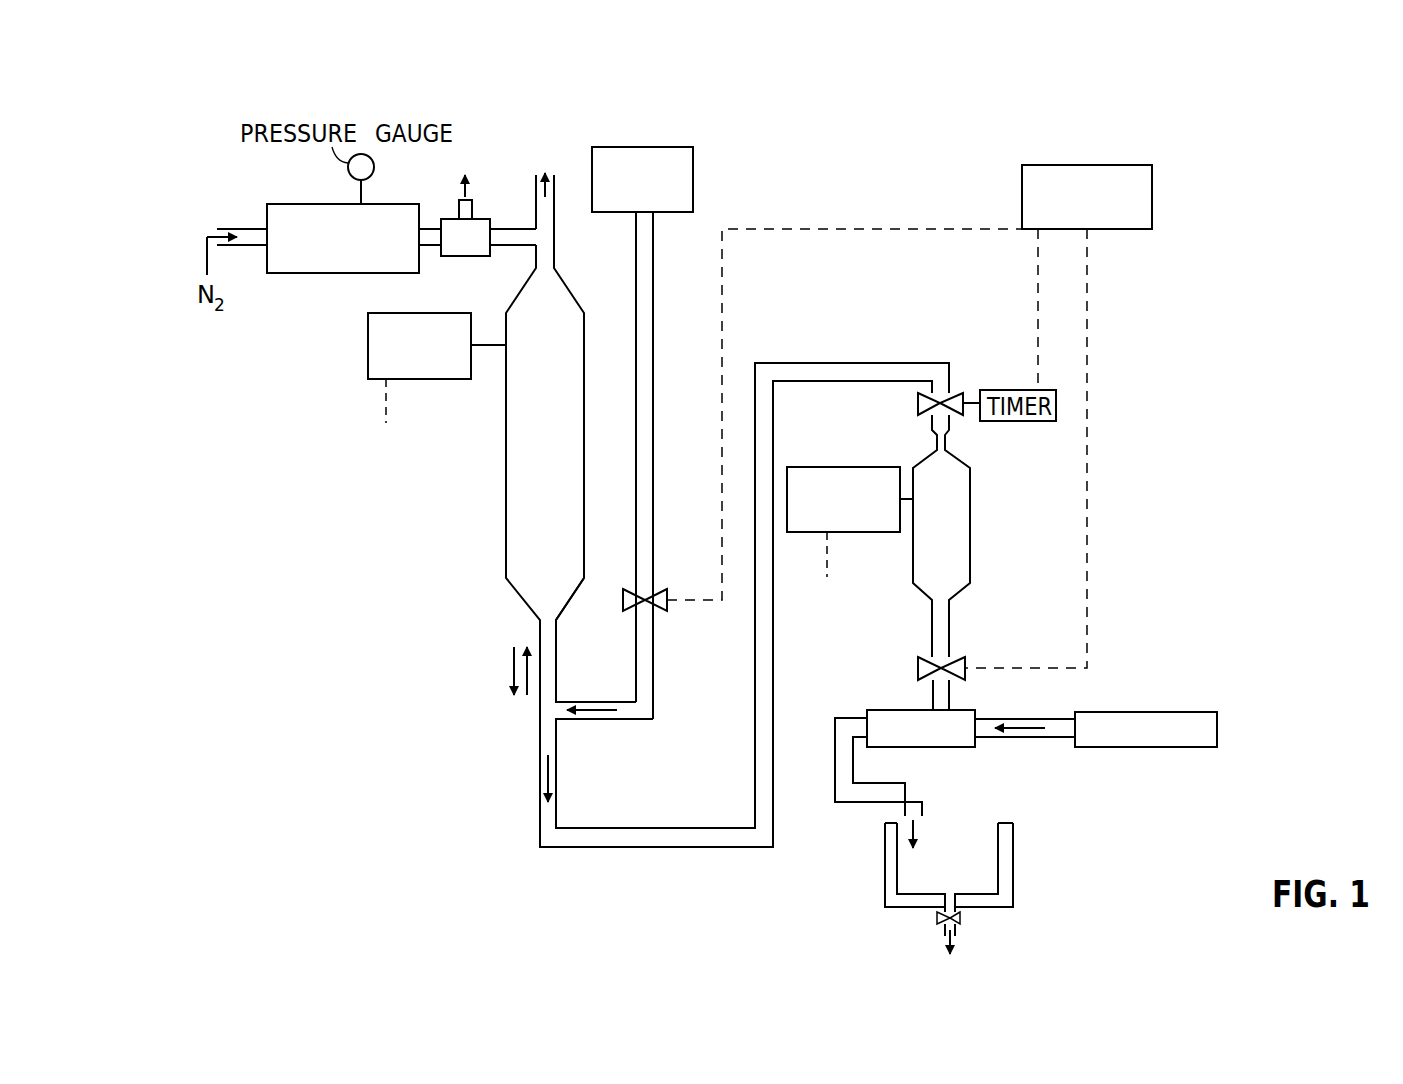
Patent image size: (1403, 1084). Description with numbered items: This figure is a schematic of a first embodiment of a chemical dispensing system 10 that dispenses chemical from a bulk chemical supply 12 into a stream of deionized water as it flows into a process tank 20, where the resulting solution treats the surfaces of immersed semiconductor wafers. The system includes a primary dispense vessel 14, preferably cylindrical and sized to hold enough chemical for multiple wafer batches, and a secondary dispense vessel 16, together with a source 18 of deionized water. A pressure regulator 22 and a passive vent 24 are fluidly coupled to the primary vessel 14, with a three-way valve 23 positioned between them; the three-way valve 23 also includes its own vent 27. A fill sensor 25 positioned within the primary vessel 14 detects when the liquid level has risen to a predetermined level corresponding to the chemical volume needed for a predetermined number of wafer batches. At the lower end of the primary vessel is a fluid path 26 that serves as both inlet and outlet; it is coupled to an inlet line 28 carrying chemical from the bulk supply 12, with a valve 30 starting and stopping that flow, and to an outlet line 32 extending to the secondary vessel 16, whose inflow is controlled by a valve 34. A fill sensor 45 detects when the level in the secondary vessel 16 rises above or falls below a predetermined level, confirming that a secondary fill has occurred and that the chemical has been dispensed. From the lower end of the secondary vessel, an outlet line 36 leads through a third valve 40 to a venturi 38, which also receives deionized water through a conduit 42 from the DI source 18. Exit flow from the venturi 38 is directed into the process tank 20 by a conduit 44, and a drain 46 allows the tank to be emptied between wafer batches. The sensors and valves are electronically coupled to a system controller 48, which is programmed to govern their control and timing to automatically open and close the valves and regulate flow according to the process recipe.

The chemical dispensing system 10 is at (1280, 270).
The bulk chemical supply 12 is at (693, 172).
The primary dispense vessel 14 is at (584, 437).
The secondary dispense vessel 16 is at (970, 504).
The source of deionized water 18 is at (1217, 727).
The process tank 20 is at (1013, 837).
The pressure regulator 22 is at (348, 273).
The three-way valve 23 is at (466, 256).
The passive vent 24 is at (535, 206).
The fill sensor 25 is at (432, 313).
The fluid path 26 is at (556, 626).
The vent 27 is at (458, 211).
The inlet line 28 is at (593, 700).
The valve 30 is at (622, 599).
The outlet line 32 is at (557, 751).
The valve 34 is at (918, 405).
The outlet line 36 is at (949, 617).
The venturi 38 is at (932, 748).
The third valve 40 is at (918, 668).
The conduit 42 is at (1017, 717).
The conduit 44 is at (852, 803).
The fill sensor 45 is at (846, 466).
The drain 46 is at (961, 920).
The system controller 48 is at (1104, 229).